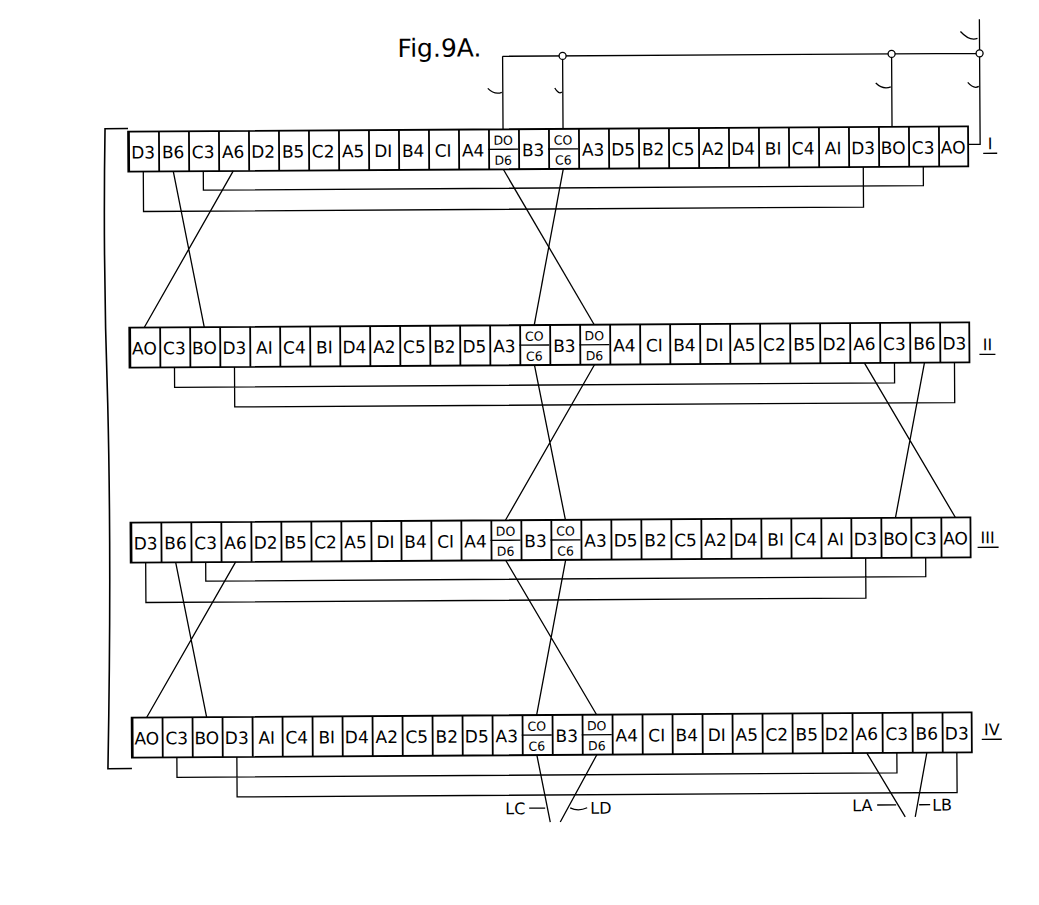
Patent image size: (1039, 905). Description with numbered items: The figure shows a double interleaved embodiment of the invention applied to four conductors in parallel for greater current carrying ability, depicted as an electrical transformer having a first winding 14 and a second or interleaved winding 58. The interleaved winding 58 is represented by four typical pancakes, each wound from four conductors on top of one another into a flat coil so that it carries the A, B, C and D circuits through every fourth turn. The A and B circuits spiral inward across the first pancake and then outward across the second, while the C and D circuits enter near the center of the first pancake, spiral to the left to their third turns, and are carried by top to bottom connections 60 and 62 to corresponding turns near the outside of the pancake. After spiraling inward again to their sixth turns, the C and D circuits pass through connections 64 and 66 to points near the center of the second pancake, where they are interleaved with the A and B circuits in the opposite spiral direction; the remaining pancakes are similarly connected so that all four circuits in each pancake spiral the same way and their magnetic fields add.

The first winding 14 is at (123, 125).
The second or interleaved winding 58 is at (737, 103).
The connection 60 is at (703, 186).
The connection 62 is at (705, 207).
The connection 64 is at (556, 217).
The connection 66 is at (567, 275).